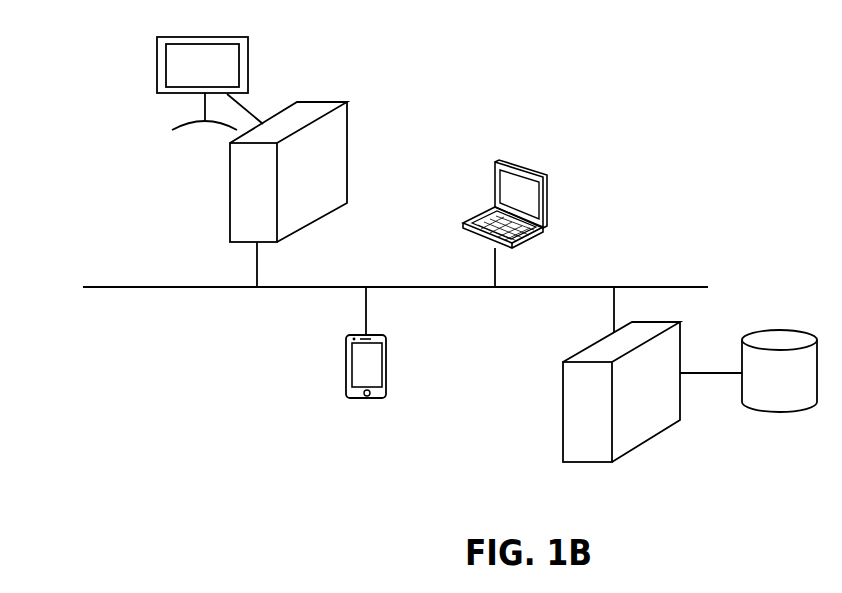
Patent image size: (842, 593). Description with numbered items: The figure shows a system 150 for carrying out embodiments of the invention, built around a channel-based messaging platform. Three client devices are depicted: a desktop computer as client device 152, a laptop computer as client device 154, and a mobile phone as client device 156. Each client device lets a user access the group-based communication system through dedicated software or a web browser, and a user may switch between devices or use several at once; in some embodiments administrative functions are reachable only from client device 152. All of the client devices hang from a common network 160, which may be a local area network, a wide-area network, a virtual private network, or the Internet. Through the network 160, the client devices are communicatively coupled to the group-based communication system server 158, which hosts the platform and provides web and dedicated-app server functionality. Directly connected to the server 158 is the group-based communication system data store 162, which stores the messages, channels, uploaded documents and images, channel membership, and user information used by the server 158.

The system 150 is at (102, 447).
The client device 152 is at (229, 193).
The client device 154 is at (496, 187).
The client device 156 is at (388, 367).
The group-based communication system server 158 is at (563, 419).
The network 160 is at (120, 289).
The group-based communication system data store 162 is at (780, 410).